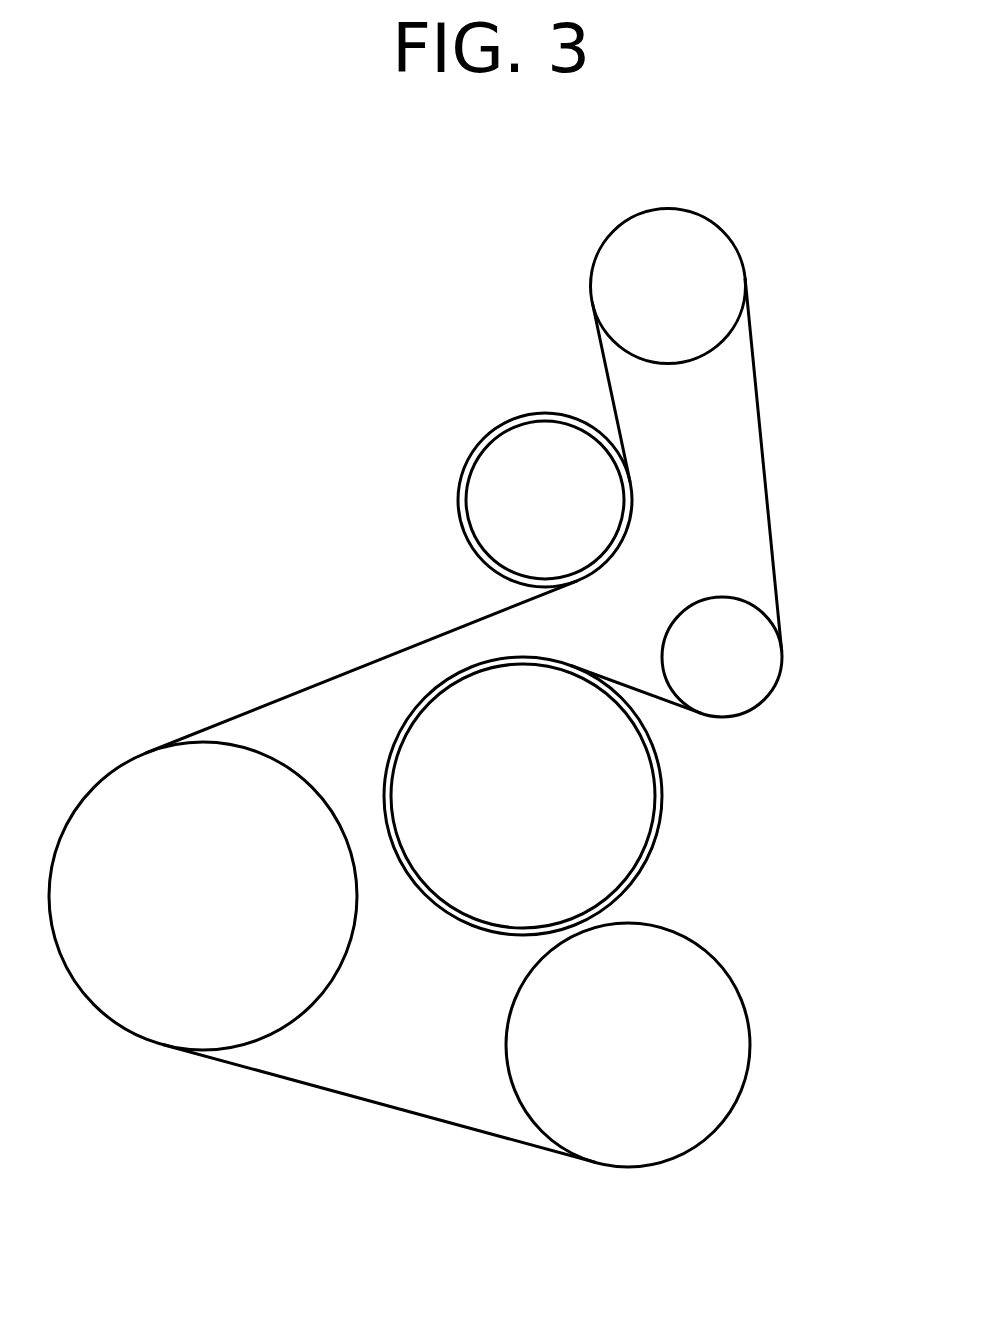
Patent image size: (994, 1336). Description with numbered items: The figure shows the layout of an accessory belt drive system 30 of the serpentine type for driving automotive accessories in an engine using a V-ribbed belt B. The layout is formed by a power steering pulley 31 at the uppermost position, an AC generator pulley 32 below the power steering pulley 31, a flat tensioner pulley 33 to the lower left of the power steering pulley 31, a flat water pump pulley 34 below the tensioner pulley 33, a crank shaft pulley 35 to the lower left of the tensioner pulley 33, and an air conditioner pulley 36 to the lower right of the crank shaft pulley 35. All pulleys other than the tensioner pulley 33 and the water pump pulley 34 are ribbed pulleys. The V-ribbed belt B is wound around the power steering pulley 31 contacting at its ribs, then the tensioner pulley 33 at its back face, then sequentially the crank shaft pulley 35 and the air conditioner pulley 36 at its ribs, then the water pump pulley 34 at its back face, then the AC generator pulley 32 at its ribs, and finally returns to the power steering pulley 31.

The accessory belt drive system 30 is at (328, 226).
The power steering pulley 31 is at (707, 243).
The AC generator pulley 32 is at (742, 682).
The tensioner pulley 33 is at (511, 458).
The water pump pulley 34 is at (623, 795).
The crank shaft pulley 35 is at (125, 1012).
The air conditioner pulley 36 is at (720, 1063).
The V-ribbed belt B is at (360, 668).